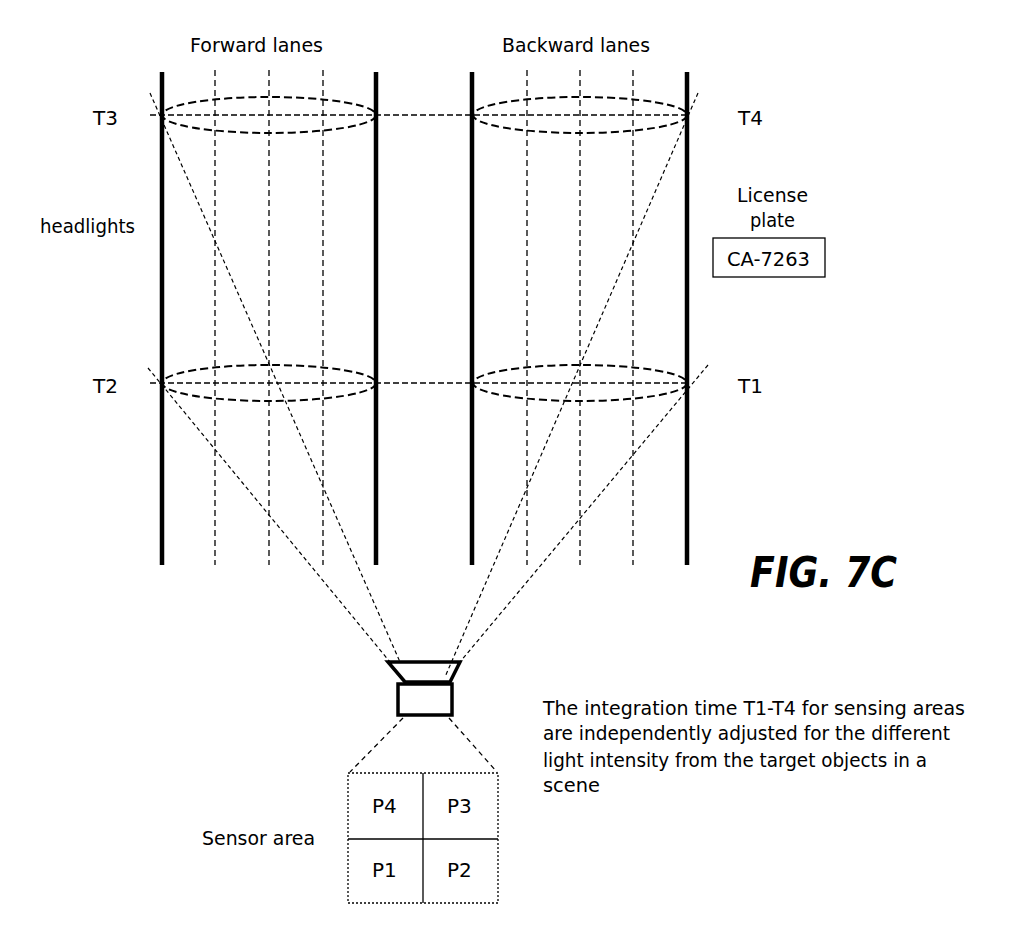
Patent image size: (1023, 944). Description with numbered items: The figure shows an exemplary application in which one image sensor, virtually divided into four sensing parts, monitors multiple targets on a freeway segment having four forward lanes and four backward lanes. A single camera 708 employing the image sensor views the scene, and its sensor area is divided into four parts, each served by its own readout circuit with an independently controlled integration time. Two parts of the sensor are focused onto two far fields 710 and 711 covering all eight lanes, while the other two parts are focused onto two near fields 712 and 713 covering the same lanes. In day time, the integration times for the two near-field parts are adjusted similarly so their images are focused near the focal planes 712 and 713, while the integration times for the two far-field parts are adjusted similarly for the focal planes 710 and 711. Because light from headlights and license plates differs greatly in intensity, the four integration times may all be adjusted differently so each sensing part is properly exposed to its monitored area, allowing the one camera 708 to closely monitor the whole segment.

The camera 708 is at (397, 698).
The far field 710 is at (352, 92).
The far field 711 is at (658, 95).
The near field 712 is at (342, 378).
The near field 713 is at (482, 378).